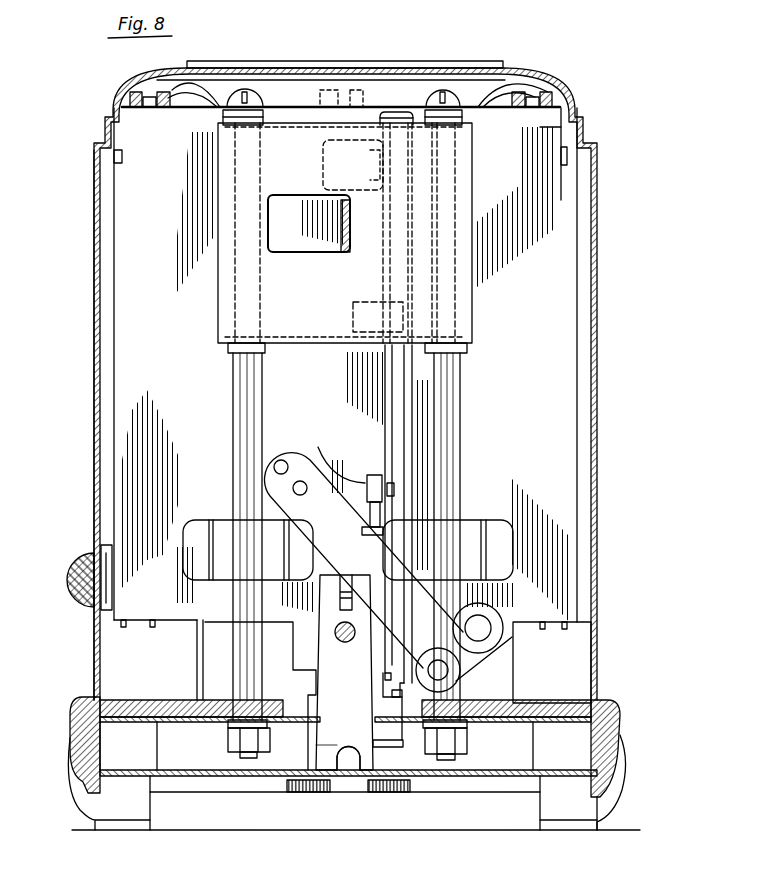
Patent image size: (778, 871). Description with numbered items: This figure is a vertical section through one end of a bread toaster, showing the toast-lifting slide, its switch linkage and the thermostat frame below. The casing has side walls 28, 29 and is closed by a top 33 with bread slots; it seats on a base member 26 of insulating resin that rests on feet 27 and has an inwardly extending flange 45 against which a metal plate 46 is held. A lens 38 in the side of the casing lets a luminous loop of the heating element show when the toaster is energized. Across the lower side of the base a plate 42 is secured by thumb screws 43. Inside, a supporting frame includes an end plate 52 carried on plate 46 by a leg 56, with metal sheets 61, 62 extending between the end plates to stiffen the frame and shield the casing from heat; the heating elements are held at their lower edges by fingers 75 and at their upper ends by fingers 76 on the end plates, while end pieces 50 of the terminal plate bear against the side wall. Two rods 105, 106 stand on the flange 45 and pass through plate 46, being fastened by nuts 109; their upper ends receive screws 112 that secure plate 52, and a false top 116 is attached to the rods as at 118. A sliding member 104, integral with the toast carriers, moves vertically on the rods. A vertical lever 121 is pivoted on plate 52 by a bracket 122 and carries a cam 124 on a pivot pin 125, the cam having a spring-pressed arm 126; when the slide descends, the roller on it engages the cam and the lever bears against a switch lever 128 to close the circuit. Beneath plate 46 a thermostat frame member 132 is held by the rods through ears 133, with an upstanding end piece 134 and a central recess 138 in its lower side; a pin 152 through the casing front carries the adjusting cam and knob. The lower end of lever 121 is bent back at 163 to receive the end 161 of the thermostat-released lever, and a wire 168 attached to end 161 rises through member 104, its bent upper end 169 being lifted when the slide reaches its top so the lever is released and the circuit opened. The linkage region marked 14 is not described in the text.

The lever arm linkage 14 is at (237, 414).
The base member 26 is at (613, 727).
The feet 27 is at (577, 813).
The side wall 28 is at (598, 331).
The side wall 29 is at (93, 381).
The top 33 is at (325, 62).
The lens 38 is at (88, 593).
The plate 42 is at (506, 777).
The thumb screws 43 is at (311, 794).
The flange 45 is at (553, 700).
The metal plate 46 is at (599, 708).
The end pieces 50 is at (583, 647).
The end plate 52 is at (345, 439).
The leg 56 is at (212, 660).
The metal sheet 61 is at (568, 156).
The metal sheet 62 is at (113, 158).
The finger 75 is at (152, 630).
The fingers 76 is at (540, 93).
The sliding member 104 is at (345, 238).
The rod 105 is at (446, 421).
The rod 106 is at (235, 456).
The nuts 109 is at (468, 747).
The screws 112 is at (447, 98).
The false top 116 is at (510, 80).
The attachment 118 is at (285, 106).
The lever 121 is at (385, 371).
The bracket 122 is at (325, 160).
The cam 124 is at (380, 476).
The pivot pin 125 is at (334, 453).
The arm 126 is at (371, 522).
The switch lever 128 is at (362, 541).
The frame member 132 is at (323, 750).
The ears 133 is at (270, 745).
The end piece 134 is at (386, 678).
The recess 138 is at (357, 766).
The pin 152 is at (342, 643).
The end of lever 161 is at (396, 688).
The bent lower end 163 is at (398, 699).
The wire 168 is at (412, 500).
The bent upper end 169 is at (383, 117).